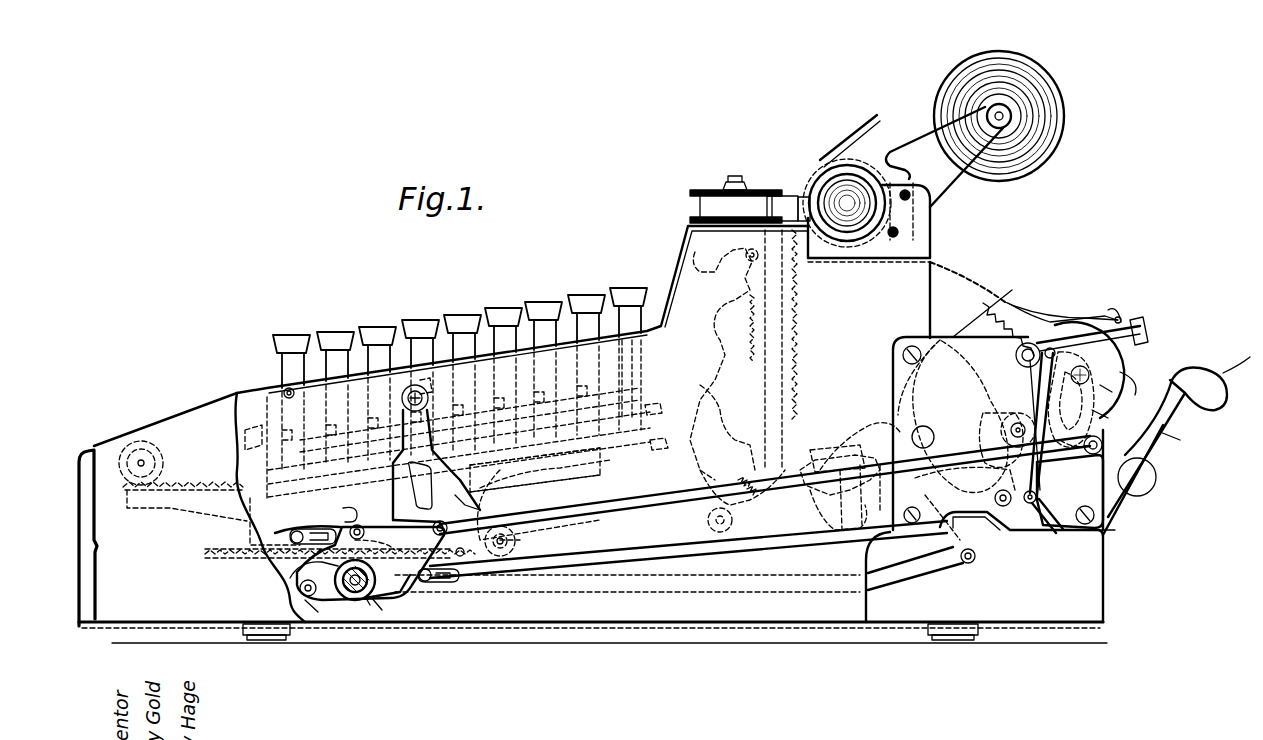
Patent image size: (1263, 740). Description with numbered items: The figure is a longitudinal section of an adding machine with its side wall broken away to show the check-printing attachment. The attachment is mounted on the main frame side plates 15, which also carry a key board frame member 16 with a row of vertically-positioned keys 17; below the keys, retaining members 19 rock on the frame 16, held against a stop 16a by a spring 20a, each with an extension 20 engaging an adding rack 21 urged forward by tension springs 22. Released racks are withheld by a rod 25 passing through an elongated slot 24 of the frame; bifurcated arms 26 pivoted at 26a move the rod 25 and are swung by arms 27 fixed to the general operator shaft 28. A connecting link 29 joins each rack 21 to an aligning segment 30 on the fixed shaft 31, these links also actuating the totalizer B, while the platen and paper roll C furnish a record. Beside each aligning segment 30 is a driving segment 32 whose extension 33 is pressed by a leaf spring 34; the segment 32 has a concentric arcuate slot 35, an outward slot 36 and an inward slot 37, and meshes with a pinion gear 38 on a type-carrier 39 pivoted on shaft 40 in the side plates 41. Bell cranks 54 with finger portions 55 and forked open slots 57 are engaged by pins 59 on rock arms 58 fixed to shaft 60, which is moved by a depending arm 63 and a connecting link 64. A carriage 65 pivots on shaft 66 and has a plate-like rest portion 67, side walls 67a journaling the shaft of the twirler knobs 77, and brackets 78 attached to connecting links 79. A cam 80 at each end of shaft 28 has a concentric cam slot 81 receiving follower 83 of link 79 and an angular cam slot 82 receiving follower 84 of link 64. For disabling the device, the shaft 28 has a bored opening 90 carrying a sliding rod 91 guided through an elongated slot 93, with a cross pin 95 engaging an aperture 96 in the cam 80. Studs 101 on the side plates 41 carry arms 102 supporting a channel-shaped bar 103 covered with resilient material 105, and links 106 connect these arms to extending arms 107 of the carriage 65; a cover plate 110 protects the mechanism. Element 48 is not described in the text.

The totalizer B is at (129, 441).
The platen and paper roll C is at (890, 126).
The main frame side plates 15 is at (858, 311).
The key board frame member 16 is at (266, 436).
The stop 16a is at (660, 436).
The keys 17 is at (455, 314).
The retaining members 19 is at (575, 470).
The extension 20 is at (544, 465).
The spring 20a is at (660, 408).
The adding rack 21 is at (192, 512).
The tension springs 22 is at (256, 562).
The elongated slot 24 is at (342, 515).
The rod 25 is at (470, 505).
The bifurcated arms 26 is at (445, 465).
The pivot 26a is at (440, 392).
The arms 27 is at (380, 560).
The general operator shaft 28 is at (357, 600).
The connecting link 29 is at (745, 585).
The aligning segments 30 is at (846, 410).
The shaft 31 is at (925, 437).
The driving segment 32 is at (978, 325).
The extension 33 is at (880, 480).
The leaf spring 34 is at (848, 462).
The concentric arcuate slot 35 is at (1040, 388).
The angular outwardly-extending arcuate slot 36 is at (1071, 399).
The angular inwardly-extending arcuate slot 37 is at (1070, 491).
The pinion gear 38 is at (1135, 370).
The type-carrier 39 is at (1115, 392).
The shaft 40 is at (1092, 375).
The side plates 41 is at (1000, 384).
The pawl 48 is at (1108, 418).
The bell cranks 54 is at (991, 440).
The finger portion 55 is at (1010, 422).
The open slot 57 is at (965, 478).
The rock arms 58 is at (994, 499).
The pins 59 is at (935, 500).
The shaft 60 is at (1027, 494).
The depending arm 63 is at (1045, 520).
The connecting link 64 is at (487, 572).
The carriage 65 is at (1170, 455).
The shaft 66 is at (1108, 528).
The rest portion 67 is at (1211, 383).
The side walls 67a is at (1195, 440).
The twirler knobs 77 is at (1145, 490).
The brackets 78 is at (1104, 445).
The connecting links 79 is at (648, 502).
The cam 80 is at (340, 600).
The concentric cam slot 81 is at (368, 522).
The cam slot 82 is at (395, 600).
The follower 83 is at (303, 521).
The follower 84 is at (438, 587).
The bored opening 90 is at (372, 603).
The rod 91 is at (363, 603).
The elongated slot 93 is at (313, 570).
The cross pin 95 is at (299, 592).
The aperture 96 is at (314, 604).
The studs 101 is at (1035, 343).
The arms 102 is at (1105, 330).
The channel-shaped bar 103 is at (1145, 335).
The resilient material 105 is at (1135, 320).
The links 106 is at (1040, 407).
The extending arms 107 is at (1054, 512).
The cover plate 110 is at (1010, 276).